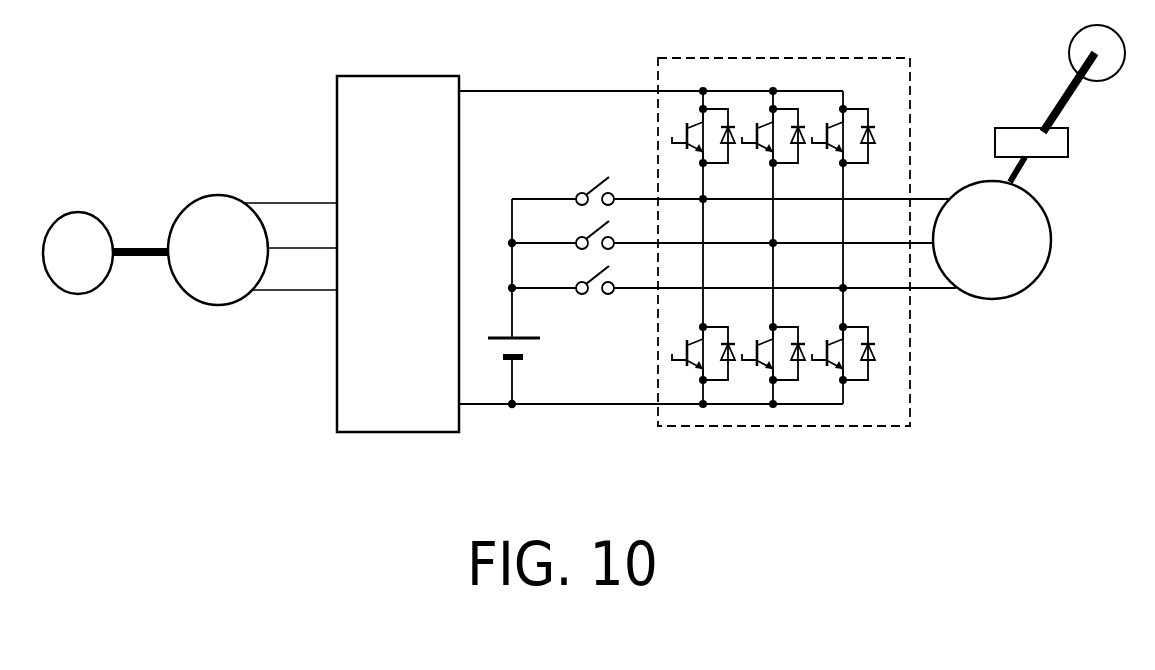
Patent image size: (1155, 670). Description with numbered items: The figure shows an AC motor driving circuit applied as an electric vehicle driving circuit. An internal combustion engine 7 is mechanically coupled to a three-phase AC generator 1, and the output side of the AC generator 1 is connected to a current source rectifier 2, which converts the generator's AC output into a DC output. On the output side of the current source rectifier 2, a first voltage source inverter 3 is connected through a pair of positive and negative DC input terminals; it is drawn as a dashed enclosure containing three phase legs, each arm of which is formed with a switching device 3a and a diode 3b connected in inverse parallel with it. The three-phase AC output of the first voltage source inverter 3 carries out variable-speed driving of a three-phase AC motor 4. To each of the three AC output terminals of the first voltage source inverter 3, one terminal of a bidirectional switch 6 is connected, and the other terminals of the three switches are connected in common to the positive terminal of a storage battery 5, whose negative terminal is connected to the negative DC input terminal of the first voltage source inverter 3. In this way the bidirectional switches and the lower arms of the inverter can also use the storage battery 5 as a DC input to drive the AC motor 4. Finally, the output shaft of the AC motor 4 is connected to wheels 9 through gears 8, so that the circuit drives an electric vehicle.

The three-phase AC generator 1 is at (252, 250).
The current source rectifier 2 is at (497, 254).
The first voltage source inverter 3 is at (784, 242).
The switching device 3a is at (757, 239).
The diode 3b is at (800, 244).
The three-phase AC motor 4 is at (992, 240).
The storage battery 5 is at (521, 303).
The bidirectional switch 6 is at (734, 224).
The internal combustion engine 7 is at (105, 253).
The gears 8 is at (1050, 155).
The wheels 9 is at (1095, 77).